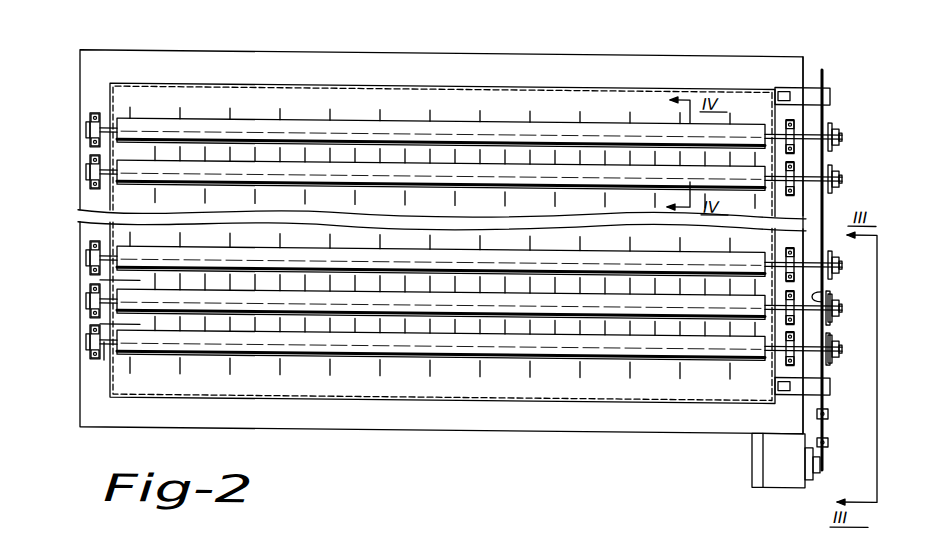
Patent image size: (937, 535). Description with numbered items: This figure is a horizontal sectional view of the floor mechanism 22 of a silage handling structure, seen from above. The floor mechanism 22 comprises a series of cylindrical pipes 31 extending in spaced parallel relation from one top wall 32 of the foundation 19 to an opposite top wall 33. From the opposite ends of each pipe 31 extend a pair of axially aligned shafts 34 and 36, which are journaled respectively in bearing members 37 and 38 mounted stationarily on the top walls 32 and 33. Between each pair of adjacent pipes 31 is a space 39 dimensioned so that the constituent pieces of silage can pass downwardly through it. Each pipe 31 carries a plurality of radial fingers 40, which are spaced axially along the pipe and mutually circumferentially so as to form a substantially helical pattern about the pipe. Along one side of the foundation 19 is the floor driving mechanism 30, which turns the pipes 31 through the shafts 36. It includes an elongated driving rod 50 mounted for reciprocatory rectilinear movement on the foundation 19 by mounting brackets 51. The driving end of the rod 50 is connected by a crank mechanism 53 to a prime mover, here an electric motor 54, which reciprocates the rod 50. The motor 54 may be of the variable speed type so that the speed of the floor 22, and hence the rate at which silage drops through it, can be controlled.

The foundation 19 is at (154, 47).
The floor mechanism 22 is at (446, 114).
The floor driving mechanism 30 is at (850, 102).
The cylindrical pipes 31 is at (352, 122).
The top wall 32 is at (92, 76).
The opposite top wall 33 is at (787, 104).
The shaft 34 is at (108, 347).
The shaft 36 is at (810, 340).
The bearing member 37 is at (95, 171).
The bearing member 38 is at (793, 174).
The space 39 is at (100, 323).
The radial fingers 40 is at (377, 240).
The driving rod 50 is at (840, 300).
The mounting brackets 51 is at (810, 79).
The crank mechanism 53 is at (827, 422).
The electric motor 54 is at (777, 464).